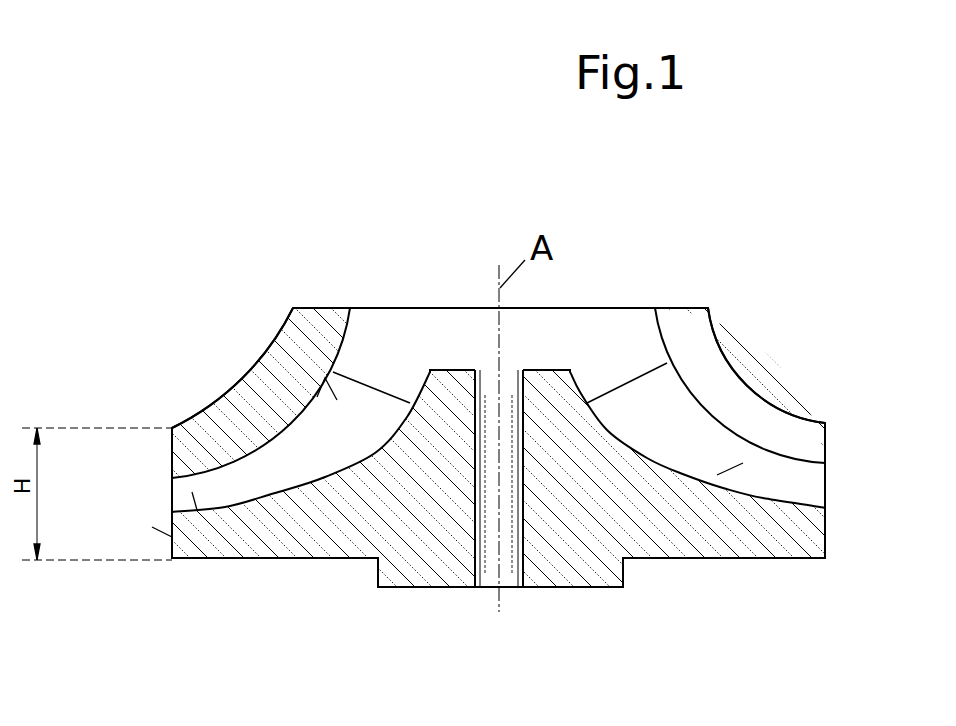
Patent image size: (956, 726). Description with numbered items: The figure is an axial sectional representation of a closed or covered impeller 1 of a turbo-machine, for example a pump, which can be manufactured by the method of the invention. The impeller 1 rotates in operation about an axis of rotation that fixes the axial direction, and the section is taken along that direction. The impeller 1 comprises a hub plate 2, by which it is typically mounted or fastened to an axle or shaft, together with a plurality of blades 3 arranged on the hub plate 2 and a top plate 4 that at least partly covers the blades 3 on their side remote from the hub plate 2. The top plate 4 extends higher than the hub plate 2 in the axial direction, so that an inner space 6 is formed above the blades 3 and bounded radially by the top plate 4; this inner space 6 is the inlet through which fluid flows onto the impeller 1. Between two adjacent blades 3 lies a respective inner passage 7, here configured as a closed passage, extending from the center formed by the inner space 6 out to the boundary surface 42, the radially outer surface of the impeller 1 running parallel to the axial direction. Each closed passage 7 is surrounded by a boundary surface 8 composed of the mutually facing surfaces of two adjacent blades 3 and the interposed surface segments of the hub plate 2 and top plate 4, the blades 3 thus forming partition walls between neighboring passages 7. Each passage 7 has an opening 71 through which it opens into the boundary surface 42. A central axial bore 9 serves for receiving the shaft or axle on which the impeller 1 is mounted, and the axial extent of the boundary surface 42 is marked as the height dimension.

The impeller 1 is at (622, 262).
The hub plate 2 is at (302, 562).
The blades 3 is at (318, 448).
The top plate 4 is at (252, 390).
The inner space 6 is at (387, 323).
The inner passage 7 is at (348, 450).
The boundary surface 8 is at (325, 378).
The central axial bore 9 is at (505, 560).
The boundary surface 42 is at (172, 535).
The opening 71 is at (172, 505).